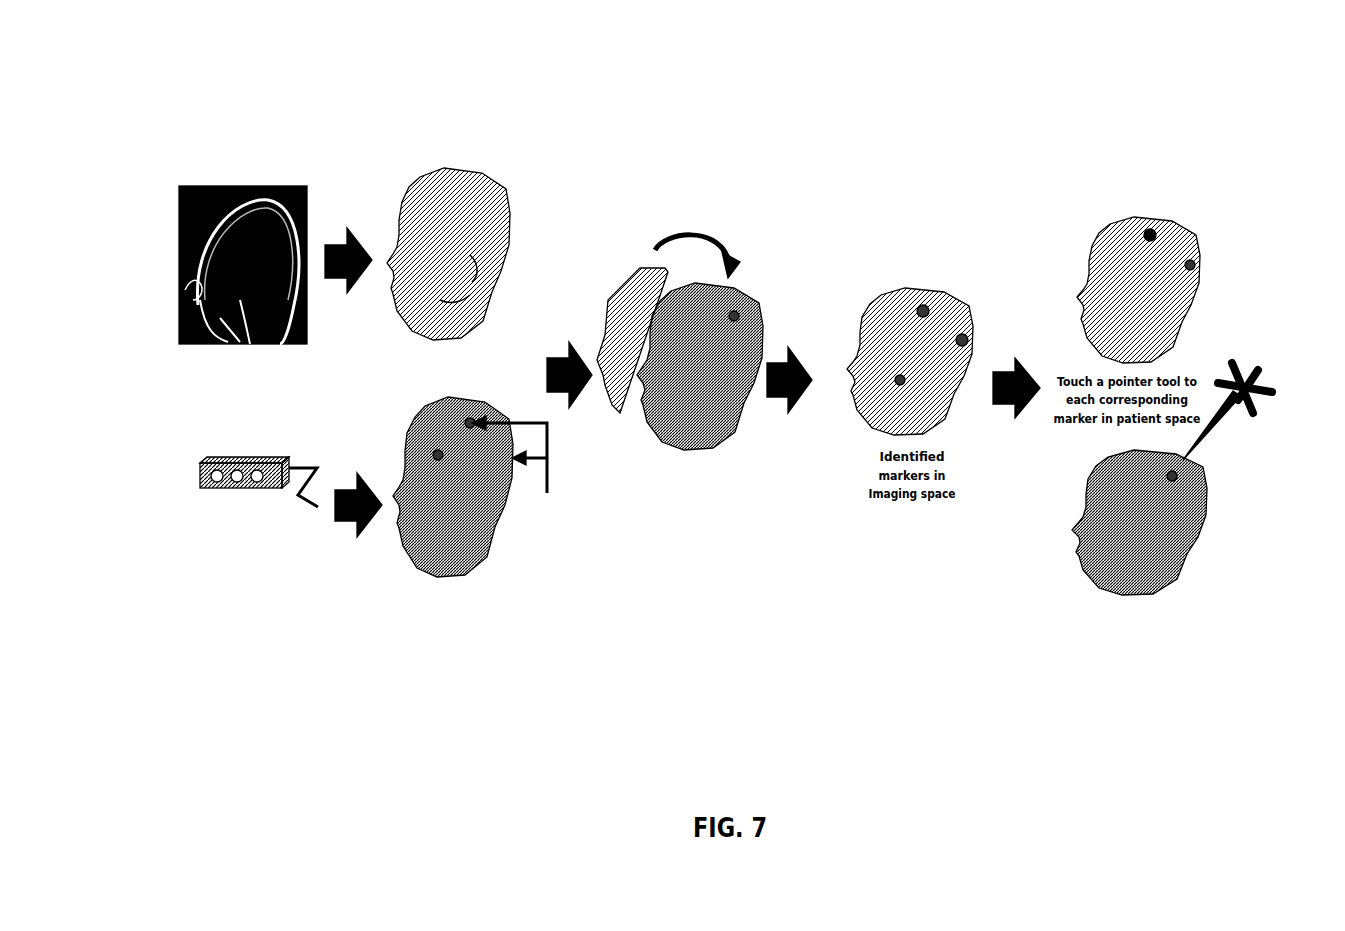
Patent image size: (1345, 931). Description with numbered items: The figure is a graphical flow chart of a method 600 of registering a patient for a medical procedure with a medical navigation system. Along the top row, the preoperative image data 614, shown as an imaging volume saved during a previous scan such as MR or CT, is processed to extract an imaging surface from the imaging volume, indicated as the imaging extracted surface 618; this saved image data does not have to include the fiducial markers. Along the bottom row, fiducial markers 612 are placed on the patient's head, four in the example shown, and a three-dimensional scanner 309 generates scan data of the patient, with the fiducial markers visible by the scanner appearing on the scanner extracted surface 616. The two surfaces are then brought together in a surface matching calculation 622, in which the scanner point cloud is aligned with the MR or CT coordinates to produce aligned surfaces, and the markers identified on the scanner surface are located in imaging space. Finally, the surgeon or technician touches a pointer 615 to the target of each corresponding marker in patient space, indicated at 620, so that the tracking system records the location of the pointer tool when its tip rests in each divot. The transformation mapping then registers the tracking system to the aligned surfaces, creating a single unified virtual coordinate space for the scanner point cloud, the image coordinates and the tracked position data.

The method of registering a patient 600 is at (1185, 118).
The preoperative image data 614 is at (277, 184).
The imaging surface extracted from the imaging volume 618 is at (480, 170).
The 3D scanner 309 is at (238, 458).
The 3D scanner extracted surface 616 is at (461, 496).
The fiducial markers 612 is at (438, 455).
The surface matching calculation 622 is at (752, 298).
The placing the pointer tool tip on the target of each fiducial marker 620 is at (1202, 353).
The pointer 615 is at (1270, 383).